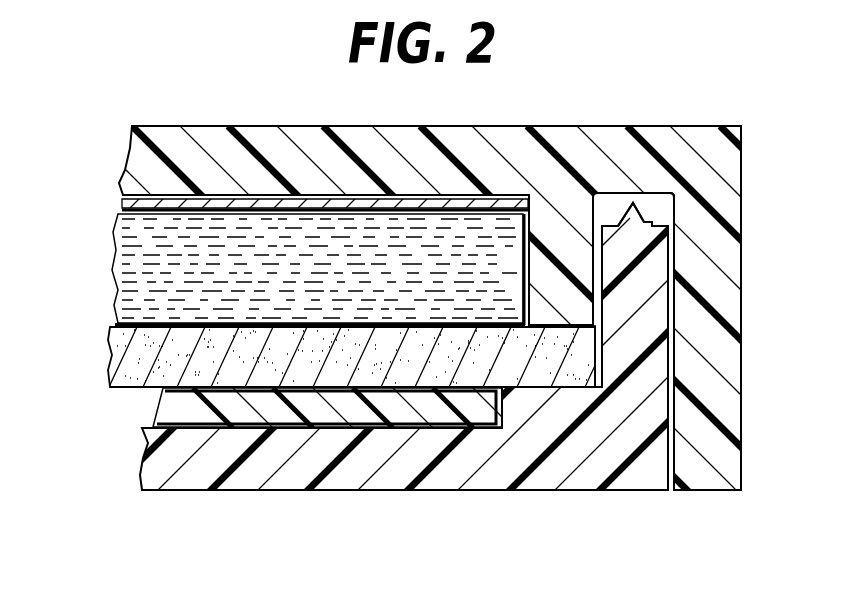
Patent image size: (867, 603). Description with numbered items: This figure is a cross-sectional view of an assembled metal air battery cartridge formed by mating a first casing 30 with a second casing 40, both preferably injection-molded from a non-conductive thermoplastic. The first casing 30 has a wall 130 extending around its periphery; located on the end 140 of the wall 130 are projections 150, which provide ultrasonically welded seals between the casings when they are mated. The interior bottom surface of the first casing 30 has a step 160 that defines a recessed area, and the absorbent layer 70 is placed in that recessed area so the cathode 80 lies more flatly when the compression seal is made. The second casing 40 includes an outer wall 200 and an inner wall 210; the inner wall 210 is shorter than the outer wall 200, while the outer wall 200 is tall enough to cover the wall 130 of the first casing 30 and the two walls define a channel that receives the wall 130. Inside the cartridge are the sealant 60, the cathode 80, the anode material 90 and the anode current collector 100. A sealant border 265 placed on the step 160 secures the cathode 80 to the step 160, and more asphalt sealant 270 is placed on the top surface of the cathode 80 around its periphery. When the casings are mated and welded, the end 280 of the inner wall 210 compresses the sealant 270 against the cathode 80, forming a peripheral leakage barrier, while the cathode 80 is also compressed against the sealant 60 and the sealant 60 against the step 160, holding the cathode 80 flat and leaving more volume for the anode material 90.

The first casing 30 is at (196, 468).
The second casing 40 is at (307, 145).
The sealant 60 is at (553, 390).
The absorbent layer 70 is at (170, 414).
The cathode 80 is at (138, 350).
The anode material 90 is at (137, 277).
The anode current collector 100 is at (128, 205).
The wall 130 is at (634, 337).
The end 140 is at (658, 222).
The projections 150 is at (642, 210).
The step 160 is at (528, 413).
The outer wall 200 is at (713, 458).
The inner wall 210 is at (557, 240).
The sealant border 265 is at (560, 388).
The sealant 270 is at (595, 327).
The end 280 is at (572, 326).